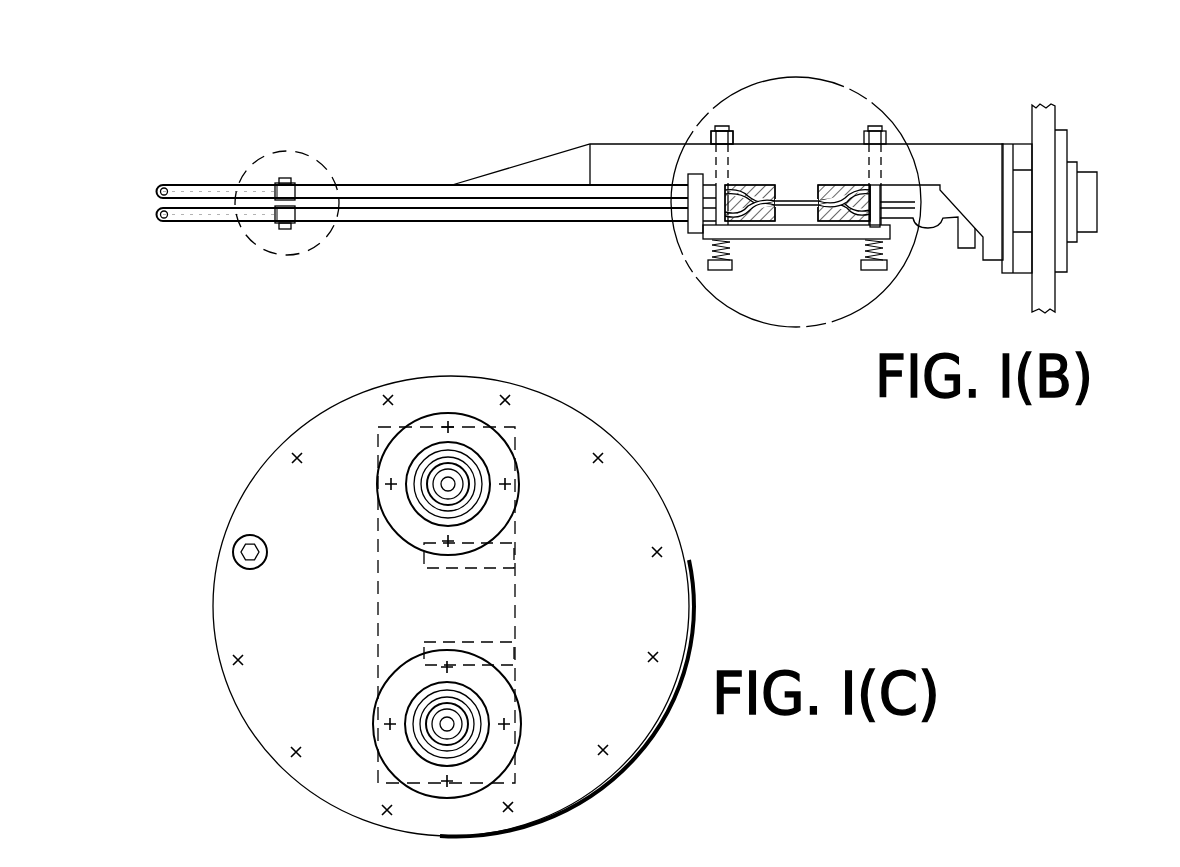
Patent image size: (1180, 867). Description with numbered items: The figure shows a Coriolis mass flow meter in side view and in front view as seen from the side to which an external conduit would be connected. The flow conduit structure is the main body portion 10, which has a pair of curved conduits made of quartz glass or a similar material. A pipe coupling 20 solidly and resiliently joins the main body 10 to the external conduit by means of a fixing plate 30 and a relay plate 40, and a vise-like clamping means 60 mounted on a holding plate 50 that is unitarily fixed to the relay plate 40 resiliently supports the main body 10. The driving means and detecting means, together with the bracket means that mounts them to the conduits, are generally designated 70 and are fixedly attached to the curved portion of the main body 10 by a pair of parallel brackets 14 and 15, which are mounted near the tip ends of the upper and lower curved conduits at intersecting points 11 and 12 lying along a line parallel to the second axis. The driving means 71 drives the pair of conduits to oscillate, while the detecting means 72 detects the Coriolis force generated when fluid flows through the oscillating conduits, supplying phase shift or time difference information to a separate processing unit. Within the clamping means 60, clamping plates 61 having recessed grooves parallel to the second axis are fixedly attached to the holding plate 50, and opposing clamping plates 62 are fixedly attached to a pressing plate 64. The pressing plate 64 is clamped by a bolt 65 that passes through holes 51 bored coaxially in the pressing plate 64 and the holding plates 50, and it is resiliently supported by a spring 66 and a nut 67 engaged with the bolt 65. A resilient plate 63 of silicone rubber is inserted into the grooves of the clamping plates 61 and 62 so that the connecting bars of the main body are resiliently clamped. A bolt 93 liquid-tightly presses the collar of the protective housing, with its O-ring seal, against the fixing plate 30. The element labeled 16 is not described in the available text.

In FIG. 1B, the main body portion 10 is at (150, 173).
In FIG. 1B, the intersecting point 11 is at (284, 182).
In FIG. 1B, the intersecting point 12 is at (282, 226).
In FIG. 1B, the bracket 14 is at (275, 183).
In FIG. 1B, the bracket 15 is at (277, 224).
In FIG. 1B, the optical fibers 16 is at (270, 190).
In FIG. 1C, the pipe coupling 20 is at (447, 413).
In FIG. 1B, the fixing plate 30 is at (1057, 113).
In FIG. 1C, the fixing plate 30 is at (325, 418).
In FIG. 1B, the relay plate 40 is at (1004, 144).
In FIG. 1C, the relay plate 40 is at (378, 585).
In FIG. 1B, the holding plate 50 is at (968, 144).
In FIG. 1C, the holding plate 50 is at (500, 560).
In FIG. 1B, the hole 51 is at (730, 150).
In FIG. 1B, the clamping means 60 is at (852, 84).
In FIG. 1B, the clamping plate 61 is at (737, 186).
In FIG. 1B, the clamping plate 62 is at (830, 224).
In FIG. 1B, the resilient plate 63 is at (820, 184).
In FIG. 1B, the pressing plate 64 is at (848, 238).
In FIG. 1B, the bolt 65 is at (714, 130).
In FIG. 1B, the spring 66 is at (700, 245).
In FIG. 1B, the nut 67 is at (700, 140).
In FIG. 1B, the driving and detecting means with bracket means 70 is at (303, 160).
In FIG. 1B, the driving means 71 is at (298, 183).
In FIG. 1B, the detecting means 72 is at (300, 224).
In FIG. 1C, the bolt 93 is at (240, 542).